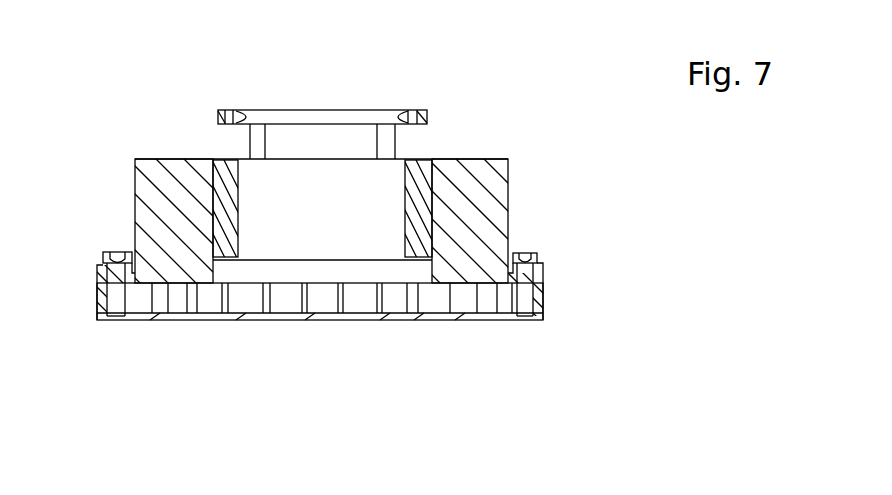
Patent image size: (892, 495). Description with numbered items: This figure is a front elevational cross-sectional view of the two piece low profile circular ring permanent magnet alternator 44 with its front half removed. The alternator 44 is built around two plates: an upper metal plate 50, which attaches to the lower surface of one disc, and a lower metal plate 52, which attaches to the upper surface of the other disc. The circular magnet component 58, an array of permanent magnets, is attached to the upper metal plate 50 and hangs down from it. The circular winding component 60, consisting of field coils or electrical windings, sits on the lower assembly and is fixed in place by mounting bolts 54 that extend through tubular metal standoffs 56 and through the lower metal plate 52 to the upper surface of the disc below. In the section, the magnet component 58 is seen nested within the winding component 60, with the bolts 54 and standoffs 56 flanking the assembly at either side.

The two piece low profile circular ring permanent magnet alternator 44 is at (590, 187).
The upper metal plate 50 is at (427, 112).
The lower metal plate 52 is at (445, 315).
The mounting bolts 54 is at (106, 250).
The tubular metal standoffs 56 is at (99, 292).
The circular magnet component 58 is at (418, 158).
The circular winding component 60 is at (508, 200).